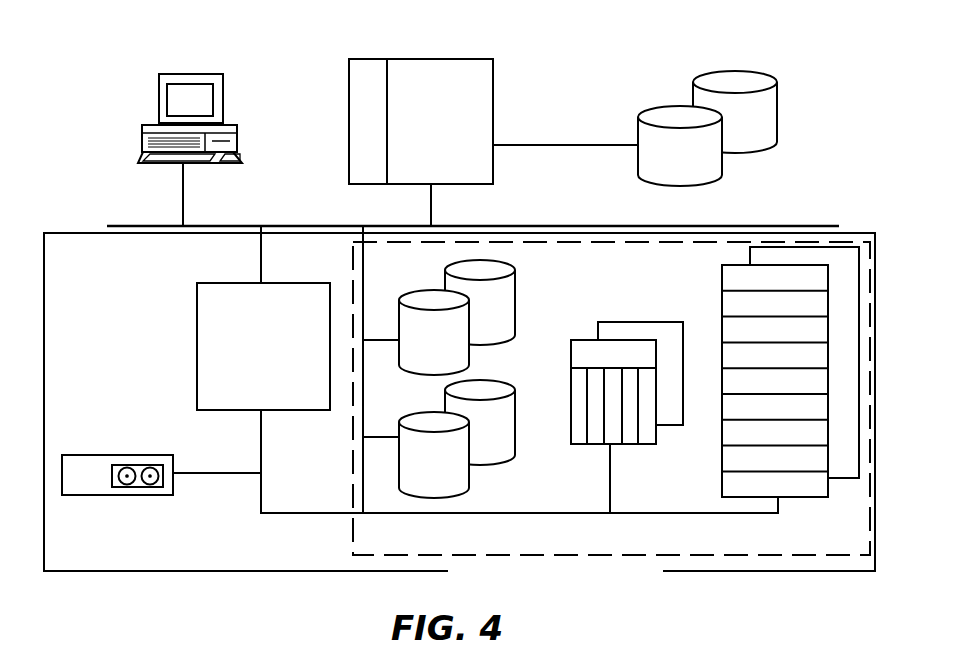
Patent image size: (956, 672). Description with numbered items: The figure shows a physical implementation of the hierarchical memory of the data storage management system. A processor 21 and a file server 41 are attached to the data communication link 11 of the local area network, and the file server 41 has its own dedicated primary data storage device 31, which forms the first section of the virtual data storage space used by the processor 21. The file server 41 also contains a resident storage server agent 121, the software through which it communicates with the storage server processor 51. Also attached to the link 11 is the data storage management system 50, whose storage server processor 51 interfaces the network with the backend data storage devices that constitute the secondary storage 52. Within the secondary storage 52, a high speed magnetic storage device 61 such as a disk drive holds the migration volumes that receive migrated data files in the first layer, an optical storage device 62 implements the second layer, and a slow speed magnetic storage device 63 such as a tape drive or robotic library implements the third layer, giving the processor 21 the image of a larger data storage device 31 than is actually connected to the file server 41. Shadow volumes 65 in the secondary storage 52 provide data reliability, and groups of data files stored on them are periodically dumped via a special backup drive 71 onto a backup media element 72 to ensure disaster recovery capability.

The processor 21 is at (223, 96).
The storage server agent 121 is at (349, 143).
The file server 41 is at (493, 67).
The primary data storage device 31 is at (722, 166).
The data communication link 11 is at (570, 223).
The data storage management system 50 is at (63, 233).
The secondary storage 52 is at (352, 248).
The storage server processor 51 is at (197, 328).
The backup drive 71 is at (92, 455).
The backup media element 72 is at (165, 487).
The high speed magnetic storage device 61 is at (471, 351).
The shadow volumes 65 is at (471, 477).
The optical storage device 62 is at (630, 445).
The slow speed magnetic storage device 63 is at (722, 480).